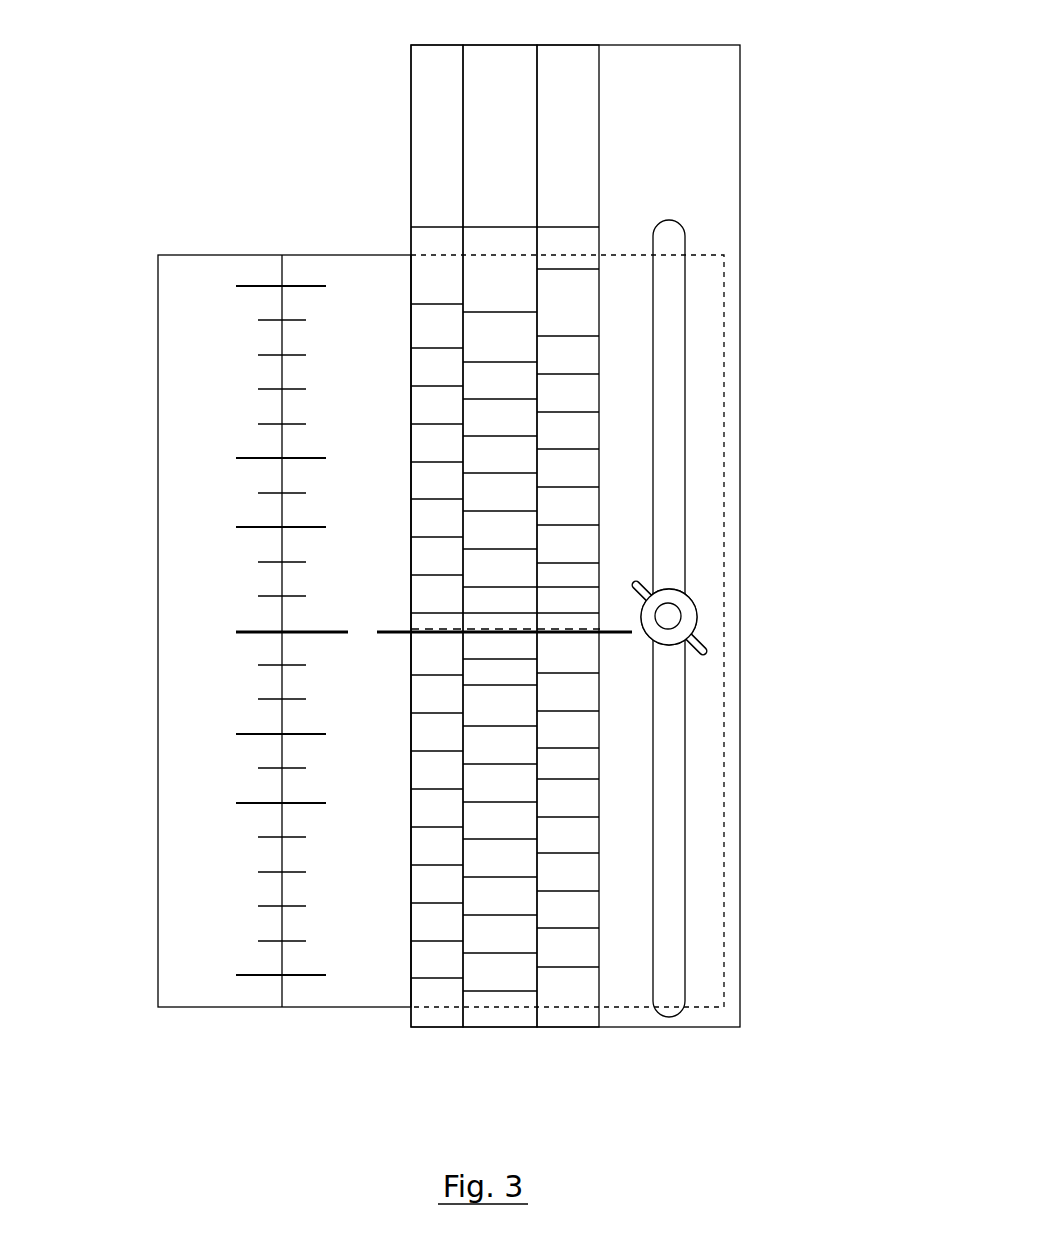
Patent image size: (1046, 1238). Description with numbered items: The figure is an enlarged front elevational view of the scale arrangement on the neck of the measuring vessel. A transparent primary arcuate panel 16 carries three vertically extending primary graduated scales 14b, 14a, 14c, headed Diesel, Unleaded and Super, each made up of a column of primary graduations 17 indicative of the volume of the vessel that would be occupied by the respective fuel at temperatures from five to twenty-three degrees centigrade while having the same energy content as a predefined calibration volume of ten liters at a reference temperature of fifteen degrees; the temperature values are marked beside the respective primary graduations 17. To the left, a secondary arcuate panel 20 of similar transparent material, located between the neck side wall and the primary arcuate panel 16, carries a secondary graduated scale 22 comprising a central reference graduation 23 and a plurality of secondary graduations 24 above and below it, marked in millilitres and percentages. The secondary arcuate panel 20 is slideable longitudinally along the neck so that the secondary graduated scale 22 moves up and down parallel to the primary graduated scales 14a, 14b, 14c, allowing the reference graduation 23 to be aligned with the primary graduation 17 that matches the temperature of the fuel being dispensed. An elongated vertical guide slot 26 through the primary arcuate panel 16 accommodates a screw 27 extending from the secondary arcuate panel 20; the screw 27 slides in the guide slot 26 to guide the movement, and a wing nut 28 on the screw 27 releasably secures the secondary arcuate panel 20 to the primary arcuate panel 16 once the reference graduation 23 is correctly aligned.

The primary graduated scale 14a is at (495, 1018).
The primary graduated scale 14b is at (432, 1020).
The primary graduated scale 14c is at (565, 1017).
The primary arcuate panel 16 is at (718, 105).
The primary graduations 17 is at (418, 386).
The secondary arcuate panel 20 is at (302, 587).
The secondary graduated scale 22 is at (298, 977).
The reference graduation 23 is at (258, 633).
The secondary graduations 24 is at (299, 320).
The guide slot 26 is at (685, 403).
The screw 27 is at (668, 617).
The wing nut 28 is at (675, 597).